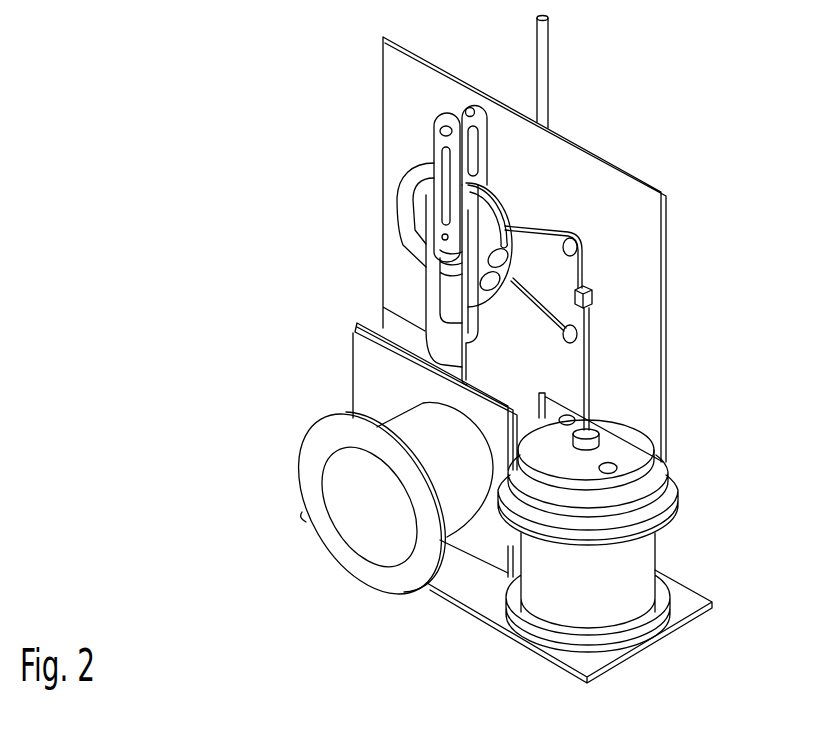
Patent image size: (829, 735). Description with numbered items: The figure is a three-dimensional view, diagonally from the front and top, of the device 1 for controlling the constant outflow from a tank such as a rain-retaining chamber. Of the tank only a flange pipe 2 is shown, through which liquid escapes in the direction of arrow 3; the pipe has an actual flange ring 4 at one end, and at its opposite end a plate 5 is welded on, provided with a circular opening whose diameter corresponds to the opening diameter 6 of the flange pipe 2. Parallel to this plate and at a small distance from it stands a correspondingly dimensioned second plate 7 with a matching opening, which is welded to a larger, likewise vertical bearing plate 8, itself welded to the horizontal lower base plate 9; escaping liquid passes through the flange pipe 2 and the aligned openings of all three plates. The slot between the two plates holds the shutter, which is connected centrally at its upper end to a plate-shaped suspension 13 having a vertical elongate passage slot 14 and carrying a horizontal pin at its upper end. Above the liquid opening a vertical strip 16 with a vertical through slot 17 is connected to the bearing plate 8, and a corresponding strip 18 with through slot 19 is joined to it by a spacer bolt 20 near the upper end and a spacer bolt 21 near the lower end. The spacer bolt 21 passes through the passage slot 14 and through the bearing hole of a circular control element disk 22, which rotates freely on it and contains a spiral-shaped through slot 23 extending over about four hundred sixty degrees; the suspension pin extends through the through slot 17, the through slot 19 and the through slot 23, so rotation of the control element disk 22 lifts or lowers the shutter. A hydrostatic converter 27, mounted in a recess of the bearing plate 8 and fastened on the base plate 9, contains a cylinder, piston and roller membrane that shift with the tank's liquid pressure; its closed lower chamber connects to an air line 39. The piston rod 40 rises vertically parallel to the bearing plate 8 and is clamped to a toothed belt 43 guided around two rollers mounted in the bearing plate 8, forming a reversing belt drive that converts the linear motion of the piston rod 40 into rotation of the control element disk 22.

The device 1 is at (730, 195).
The flange pipe 2 is at (284, 485).
The arrow 3 is at (362, 530).
The flange ring 4 is at (391, 582).
The plate 5 is at (365, 363).
The opening diameter 6 is at (345, 474).
The plate 7 is at (365, 323).
The bearing plate 8 is at (648, 254).
The base plate 9 is at (690, 608).
The suspension 13 is at (440, 333).
The passage slot 14 is at (450, 307).
The strip 16 is at (487, 136).
The through slot 17 is at (470, 158).
The strip 18 is at (440, 138).
The through slot 19 is at (440, 156).
The spacer bolt 20 is at (467, 110).
The spacer bolt 21 is at (442, 238).
The control element disk 22 is at (407, 185).
The spiral-shaped through slot 23 is at (490, 216).
The hydrostatic converter 27 is at (638, 553).
The line 39 is at (549, 63).
The piston rod 40 is at (585, 388).
The belt 43 is at (555, 228).